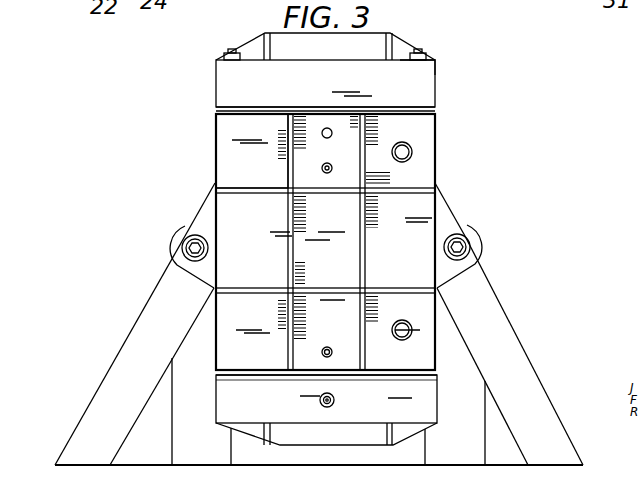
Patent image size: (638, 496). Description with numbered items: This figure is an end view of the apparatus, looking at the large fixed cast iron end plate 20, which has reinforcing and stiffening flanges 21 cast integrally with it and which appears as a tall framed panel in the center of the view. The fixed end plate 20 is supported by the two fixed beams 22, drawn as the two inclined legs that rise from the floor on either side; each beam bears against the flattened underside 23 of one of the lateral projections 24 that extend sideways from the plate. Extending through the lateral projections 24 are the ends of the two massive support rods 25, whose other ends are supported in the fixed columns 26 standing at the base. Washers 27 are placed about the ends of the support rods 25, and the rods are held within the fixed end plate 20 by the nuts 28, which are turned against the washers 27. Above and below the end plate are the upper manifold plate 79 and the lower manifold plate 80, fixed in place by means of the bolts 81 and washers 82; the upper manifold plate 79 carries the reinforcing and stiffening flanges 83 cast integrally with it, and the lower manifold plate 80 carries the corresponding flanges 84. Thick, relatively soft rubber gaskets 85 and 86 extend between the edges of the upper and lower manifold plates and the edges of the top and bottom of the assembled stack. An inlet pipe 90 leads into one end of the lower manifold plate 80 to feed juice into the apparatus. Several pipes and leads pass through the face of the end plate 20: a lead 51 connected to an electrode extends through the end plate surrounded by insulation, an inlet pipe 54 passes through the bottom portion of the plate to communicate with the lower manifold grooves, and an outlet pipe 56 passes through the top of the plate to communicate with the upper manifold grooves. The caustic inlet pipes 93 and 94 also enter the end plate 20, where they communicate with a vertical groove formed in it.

The fixed cast iron end plate 20 is at (220, 145).
The reinforcing and stiffening flanges 21 is at (287, 227).
The fixed beams 22 is at (134, 332).
The flattened undersides 23 is at (185, 280).
The lateral projections 24 is at (190, 214).
The support rods 25 is at (190, 248).
The fixed columns 26 is at (172, 447).
The washers 27 is at (207, 250).
The nuts 28 is at (197, 240).
The lead 51 is at (329, 167).
The inlet pipe 54 is at (328, 346).
The outlet pipe 56 is at (329, 134).
The upper manifold plate 79 is at (430, 81).
The lower manifold plate 80 is at (432, 402).
The bolts 81 is at (232, 53).
The washers 82 is at (428, 60).
The reinforcing and stiffening flanges 83 is at (275, 33).
The reinforcing and stiffening flanges 84 is at (280, 438).
The rubber gasket 85 is at (390, 107).
The rubber gasket 86 is at (280, 380).
The inlet pipe 90 is at (338, 390).
The caustic inlet pipe 93 is at (405, 148).
The caustic inlet pipe 94 is at (401, 323).